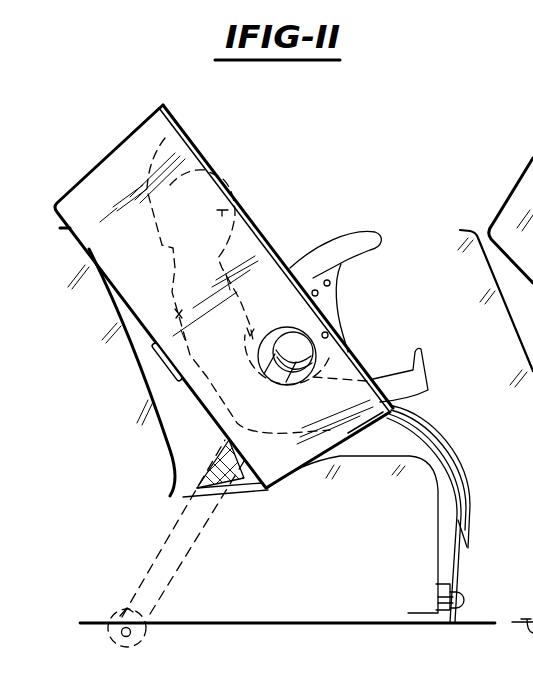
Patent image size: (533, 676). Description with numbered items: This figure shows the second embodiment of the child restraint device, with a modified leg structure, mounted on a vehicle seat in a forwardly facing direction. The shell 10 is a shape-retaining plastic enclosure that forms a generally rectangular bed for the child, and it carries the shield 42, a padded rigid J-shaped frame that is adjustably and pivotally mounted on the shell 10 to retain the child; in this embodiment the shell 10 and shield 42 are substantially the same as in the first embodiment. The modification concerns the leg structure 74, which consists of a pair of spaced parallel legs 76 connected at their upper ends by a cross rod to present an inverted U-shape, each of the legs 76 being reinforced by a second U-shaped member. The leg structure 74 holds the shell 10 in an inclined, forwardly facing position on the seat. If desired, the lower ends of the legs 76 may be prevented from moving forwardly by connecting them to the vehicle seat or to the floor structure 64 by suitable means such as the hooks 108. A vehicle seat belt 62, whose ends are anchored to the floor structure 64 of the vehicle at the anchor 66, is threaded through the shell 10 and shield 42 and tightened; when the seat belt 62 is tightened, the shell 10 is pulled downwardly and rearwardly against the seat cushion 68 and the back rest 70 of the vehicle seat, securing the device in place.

The shell 10 is at (207, 131).
The shield 42 is at (352, 230).
The seat belt 62 is at (188, 541).
The floor structure 64 is at (331, 578).
The seat belt anchor 66 is at (150, 623).
The seat cushion 68 is at (372, 457).
The back rest 70 is at (128, 343).
The leg structure 74 is at (466, 452).
The legs 76 is at (462, 561).
The hooks 108 is at (462, 594).